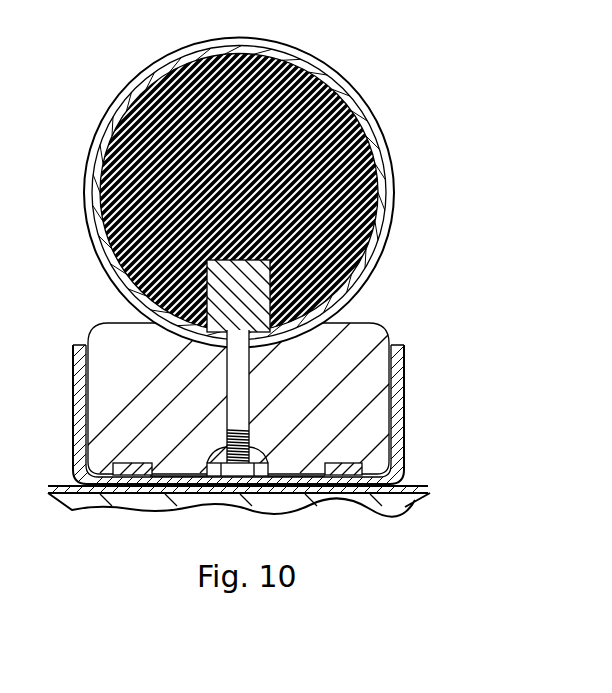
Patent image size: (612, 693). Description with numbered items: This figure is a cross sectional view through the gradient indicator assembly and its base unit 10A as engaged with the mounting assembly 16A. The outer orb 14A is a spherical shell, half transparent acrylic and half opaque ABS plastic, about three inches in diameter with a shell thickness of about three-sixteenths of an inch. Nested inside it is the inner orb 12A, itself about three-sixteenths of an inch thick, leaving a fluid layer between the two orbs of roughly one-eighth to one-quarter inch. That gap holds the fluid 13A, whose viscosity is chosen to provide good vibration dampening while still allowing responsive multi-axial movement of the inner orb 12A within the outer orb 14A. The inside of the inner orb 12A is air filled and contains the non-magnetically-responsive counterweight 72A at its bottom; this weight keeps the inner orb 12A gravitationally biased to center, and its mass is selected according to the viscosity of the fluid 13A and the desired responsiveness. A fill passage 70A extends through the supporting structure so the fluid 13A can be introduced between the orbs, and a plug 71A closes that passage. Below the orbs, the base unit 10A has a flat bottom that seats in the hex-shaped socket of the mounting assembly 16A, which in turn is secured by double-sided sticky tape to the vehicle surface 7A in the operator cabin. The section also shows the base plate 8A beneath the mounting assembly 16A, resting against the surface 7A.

The surface 7A is at (392, 502).
The base plate 8A is at (410, 486).
The base unit 10A is at (373, 325).
The inner orb 12A is at (345, 92).
The fluid 13A is at (380, 162).
The outer orb 14A is at (318, 59).
The mounting assembly 16A is at (408, 404).
The fill passage 70A is at (235, 395).
The plug 71A is at (190, 496).
The inner counterweight 72A is at (215, 290).